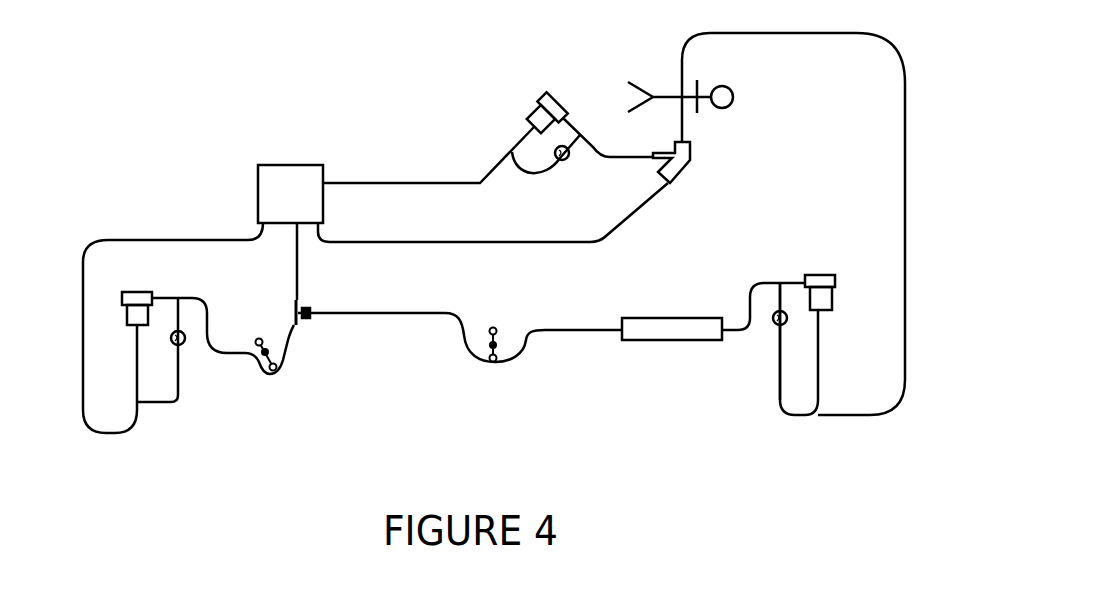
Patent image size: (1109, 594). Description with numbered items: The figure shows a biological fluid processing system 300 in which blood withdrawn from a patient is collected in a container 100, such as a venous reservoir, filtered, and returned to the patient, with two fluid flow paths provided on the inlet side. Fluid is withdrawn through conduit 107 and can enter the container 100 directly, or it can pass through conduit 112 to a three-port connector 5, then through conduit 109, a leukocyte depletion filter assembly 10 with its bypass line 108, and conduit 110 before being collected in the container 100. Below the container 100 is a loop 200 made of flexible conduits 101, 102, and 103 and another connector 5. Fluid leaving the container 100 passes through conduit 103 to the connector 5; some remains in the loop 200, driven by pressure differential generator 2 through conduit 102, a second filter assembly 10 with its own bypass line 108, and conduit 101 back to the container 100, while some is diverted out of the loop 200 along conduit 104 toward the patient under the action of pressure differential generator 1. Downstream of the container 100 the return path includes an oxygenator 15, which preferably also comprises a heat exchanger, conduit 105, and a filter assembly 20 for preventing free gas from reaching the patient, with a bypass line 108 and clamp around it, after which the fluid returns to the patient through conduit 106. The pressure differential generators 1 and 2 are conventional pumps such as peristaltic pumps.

The pressure differential generator 1 is at (494, 328).
The pressure differential generator 2 is at (263, 340).
The connector 5 is at (313, 305).
The biological fluid filter assembly 10 is at (543, 97).
The oxygenator 15 is at (667, 318).
The biological fluid filter assembly 20 is at (822, 272).
The container 100 is at (278, 164).
The conduit 101 is at (207, 238).
The conduit 102 is at (217, 352).
The conduit 103 is at (295, 257).
The conduit 104 is at (393, 318).
The conduit 105 is at (745, 332).
The conduit 106 is at (905, 142).
The conduit 107 is at (468, 243).
The bypass line 108 is at (548, 168).
The conduit 109 is at (597, 143).
The conduit 110 is at (392, 182).
The conduit 112 is at (685, 120).
The loop 200 is at (255, 313).
The biological fluid processing system 300 is at (838, 500).